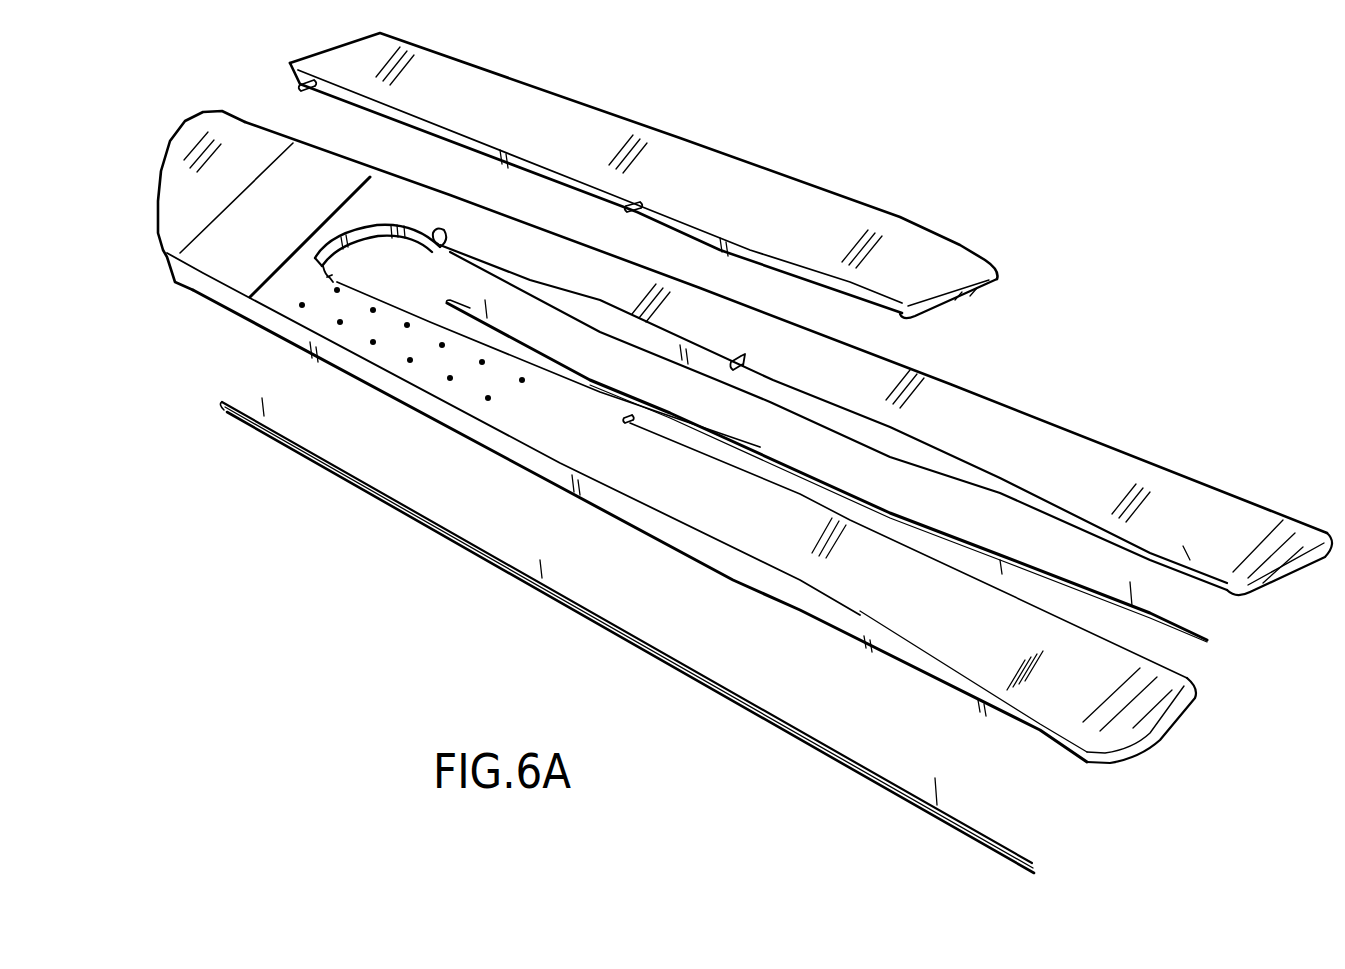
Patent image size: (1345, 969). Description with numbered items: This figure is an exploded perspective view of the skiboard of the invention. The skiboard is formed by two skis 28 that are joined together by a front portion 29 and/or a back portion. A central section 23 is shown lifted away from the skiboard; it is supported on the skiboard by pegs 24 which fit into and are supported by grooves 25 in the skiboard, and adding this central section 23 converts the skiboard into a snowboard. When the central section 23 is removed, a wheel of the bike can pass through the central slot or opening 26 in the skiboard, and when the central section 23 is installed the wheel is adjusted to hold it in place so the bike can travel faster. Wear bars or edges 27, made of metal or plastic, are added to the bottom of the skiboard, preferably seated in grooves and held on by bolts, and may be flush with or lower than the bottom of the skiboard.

The central section 23 is at (588, 112).
The pegs 24 is at (306, 86).
The grooves 25 is at (340, 276).
The central slot or opening 26 is at (958, 510).
The wear bars or edges 27 is at (1030, 557).
The skis 28 is at (1057, 428).
The front portion 29 is at (251, 134).